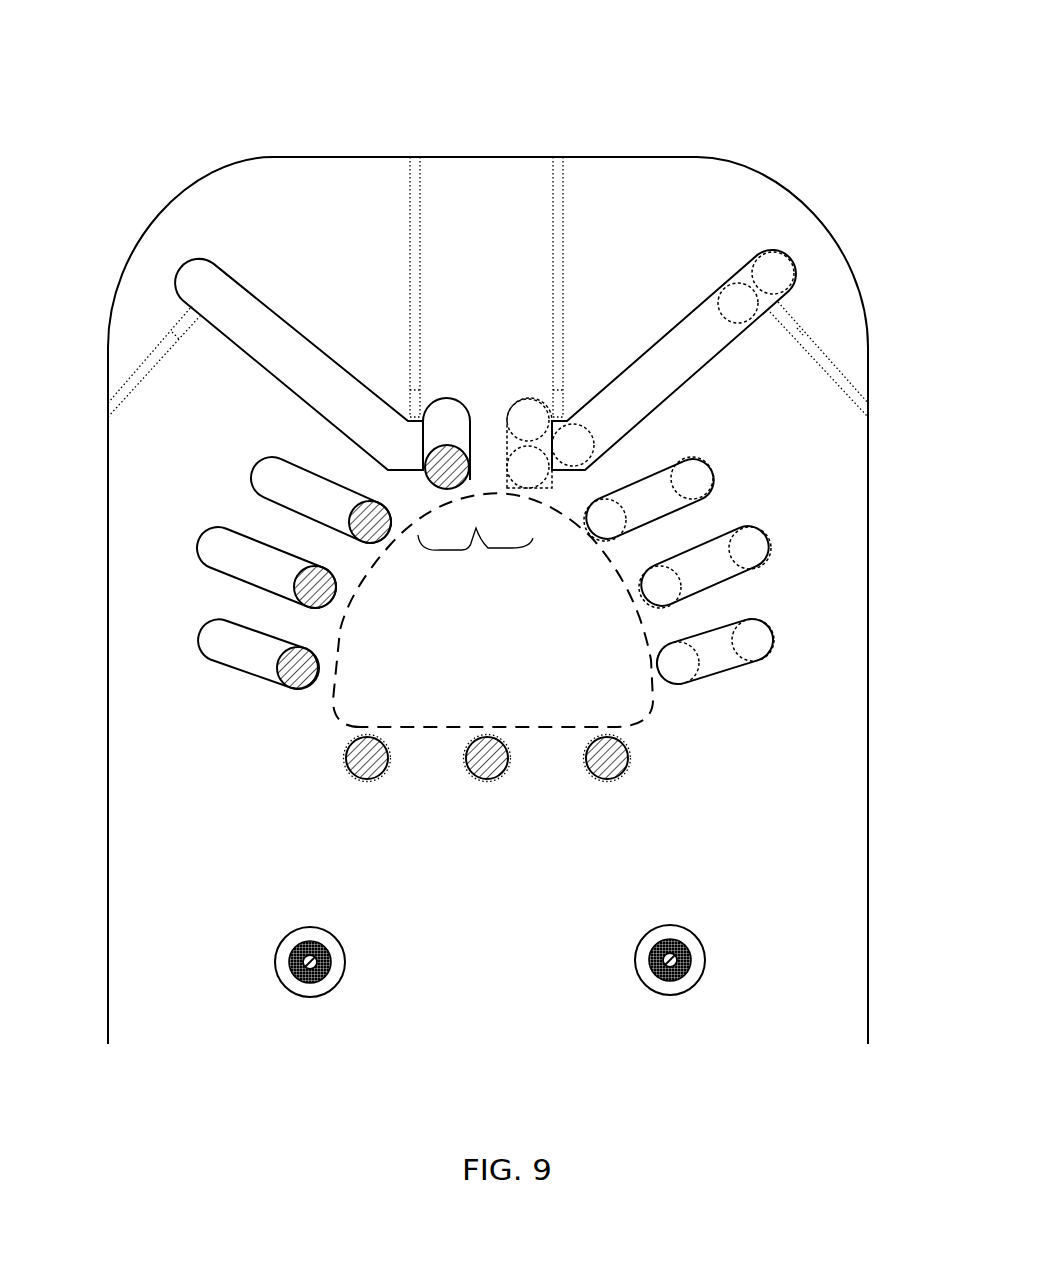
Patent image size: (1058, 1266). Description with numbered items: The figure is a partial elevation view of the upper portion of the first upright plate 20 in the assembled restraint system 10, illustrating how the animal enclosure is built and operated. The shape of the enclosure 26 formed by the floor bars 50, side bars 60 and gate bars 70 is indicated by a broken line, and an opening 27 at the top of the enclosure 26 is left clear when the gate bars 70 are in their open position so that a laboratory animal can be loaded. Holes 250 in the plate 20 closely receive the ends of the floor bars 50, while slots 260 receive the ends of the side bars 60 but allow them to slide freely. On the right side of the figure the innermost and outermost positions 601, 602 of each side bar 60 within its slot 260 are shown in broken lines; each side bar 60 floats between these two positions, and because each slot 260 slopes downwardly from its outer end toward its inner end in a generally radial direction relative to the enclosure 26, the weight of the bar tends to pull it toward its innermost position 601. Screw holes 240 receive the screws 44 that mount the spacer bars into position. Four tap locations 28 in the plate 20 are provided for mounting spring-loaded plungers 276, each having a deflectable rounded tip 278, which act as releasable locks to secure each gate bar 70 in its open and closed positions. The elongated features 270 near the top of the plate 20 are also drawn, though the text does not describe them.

The restraint system 10 is at (678, 51).
The first upright plate 20 is at (857, 837).
The tap locations 28 is at (400, 174).
The enclosure 26 is at (375, 727).
The opening 27 is at (475, 553).
The screws 44 is at (322, 970).
The floor bars 50 is at (377, 777).
The side bars 60 is at (360, 538).
The gate bars 70 is at (474, 470).
The screw holes 240 is at (318, 929).
The holes 250 is at (391, 757).
The slots 260 is at (258, 490).
The angled bar 270 is at (257, 358).
The spring-loaded plunger 276 is at (186, 328).
The rounded tip 278 is at (198, 308).
The innermost position 601 is at (612, 540).
The outermost position 602 is at (712, 483).